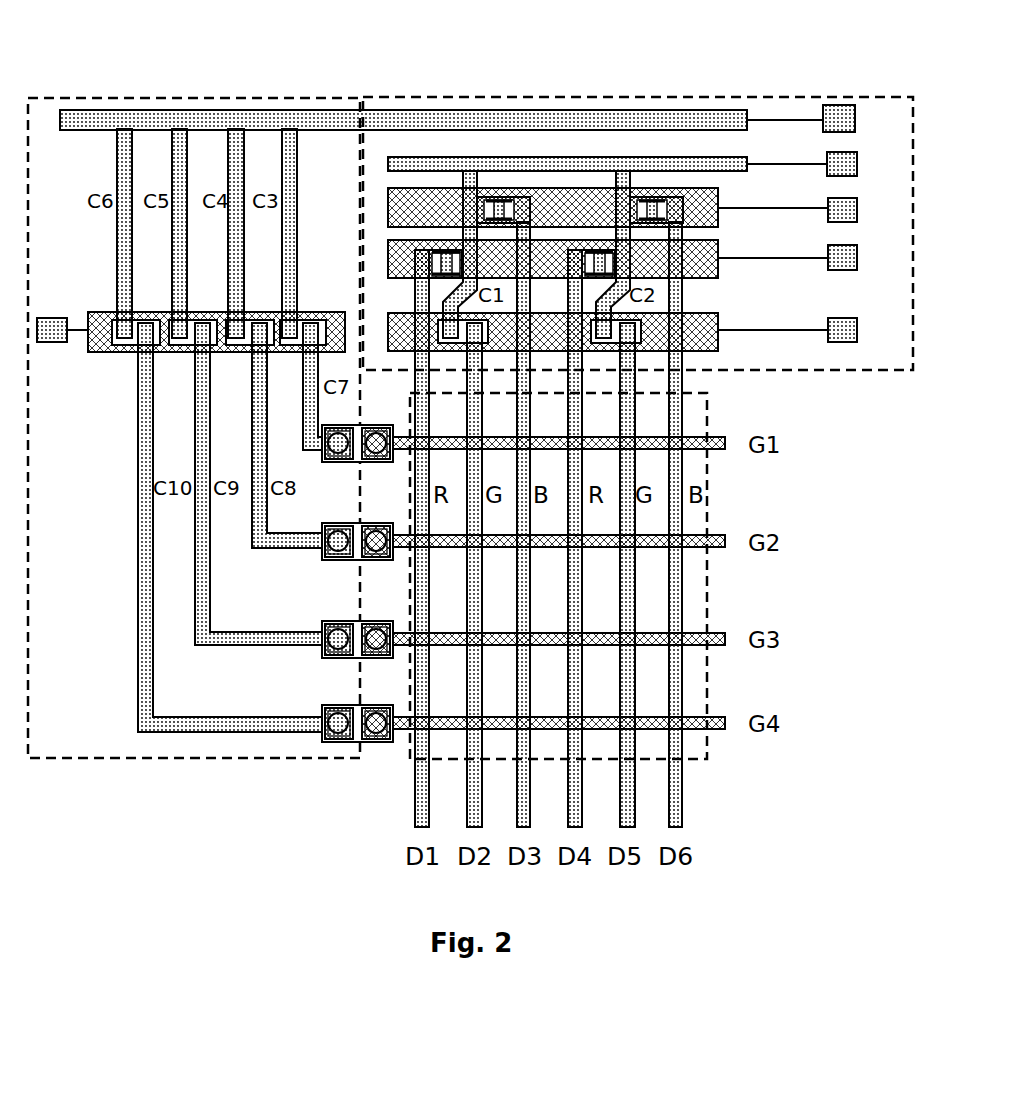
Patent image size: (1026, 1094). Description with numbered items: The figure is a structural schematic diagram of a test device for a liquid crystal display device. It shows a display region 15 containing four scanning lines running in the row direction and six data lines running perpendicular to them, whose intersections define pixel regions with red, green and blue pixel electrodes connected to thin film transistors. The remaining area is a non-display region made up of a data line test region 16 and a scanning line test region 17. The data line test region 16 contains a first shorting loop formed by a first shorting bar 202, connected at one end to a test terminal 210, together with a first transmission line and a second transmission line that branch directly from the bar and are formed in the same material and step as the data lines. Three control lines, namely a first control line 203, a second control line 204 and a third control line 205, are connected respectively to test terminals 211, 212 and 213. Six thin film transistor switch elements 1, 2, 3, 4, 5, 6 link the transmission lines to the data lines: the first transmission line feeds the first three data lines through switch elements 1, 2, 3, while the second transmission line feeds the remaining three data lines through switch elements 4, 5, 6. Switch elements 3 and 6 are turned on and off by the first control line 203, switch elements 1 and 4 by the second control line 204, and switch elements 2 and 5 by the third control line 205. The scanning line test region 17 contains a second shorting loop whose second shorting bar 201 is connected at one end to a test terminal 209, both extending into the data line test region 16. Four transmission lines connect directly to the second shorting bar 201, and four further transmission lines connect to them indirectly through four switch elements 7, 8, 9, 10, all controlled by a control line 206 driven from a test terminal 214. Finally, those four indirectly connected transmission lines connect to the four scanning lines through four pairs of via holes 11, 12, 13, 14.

The switch element 1 is at (443, 250).
The switch element 2 is at (470, 295).
The switch element 3 is at (505, 197).
The switch element 4 is at (595, 250).
The switch element 5 is at (628, 293).
The switch element 6 is at (662, 197).
The switch element 7 is at (312, 320).
The switch element 8 is at (255, 320).
The switch element 9 is at (200, 320).
The switch element 10 is at (140, 320).
The pair of via holes 11 is at (322, 460).
The pair of via holes 12 is at (322, 558).
The pair of via holes 13 is at (322, 621).
The pair of via holes 14 is at (322, 705).
The display region 15 is at (708, 590).
The data line test region 16 is at (813, 370).
The scanning line test region 17 is at (107, 758).
The second shorting bar 201 is at (441, 130).
The first shorting bar 202 is at (607, 174).
The first control line 203 is at (608, 211).
The second control line 204 is at (608, 265).
The third control line 205 is at (608, 334).
The control line 206 is at (206, 312).
The test terminal 209 is at (865, 120).
The test terminal 210 is at (868, 165).
The test terminal 211 is at (868, 211).
The test terminal 212 is at (868, 259).
The test terminal 213 is at (868, 331).
The test terminal 214 is at (54, 345).